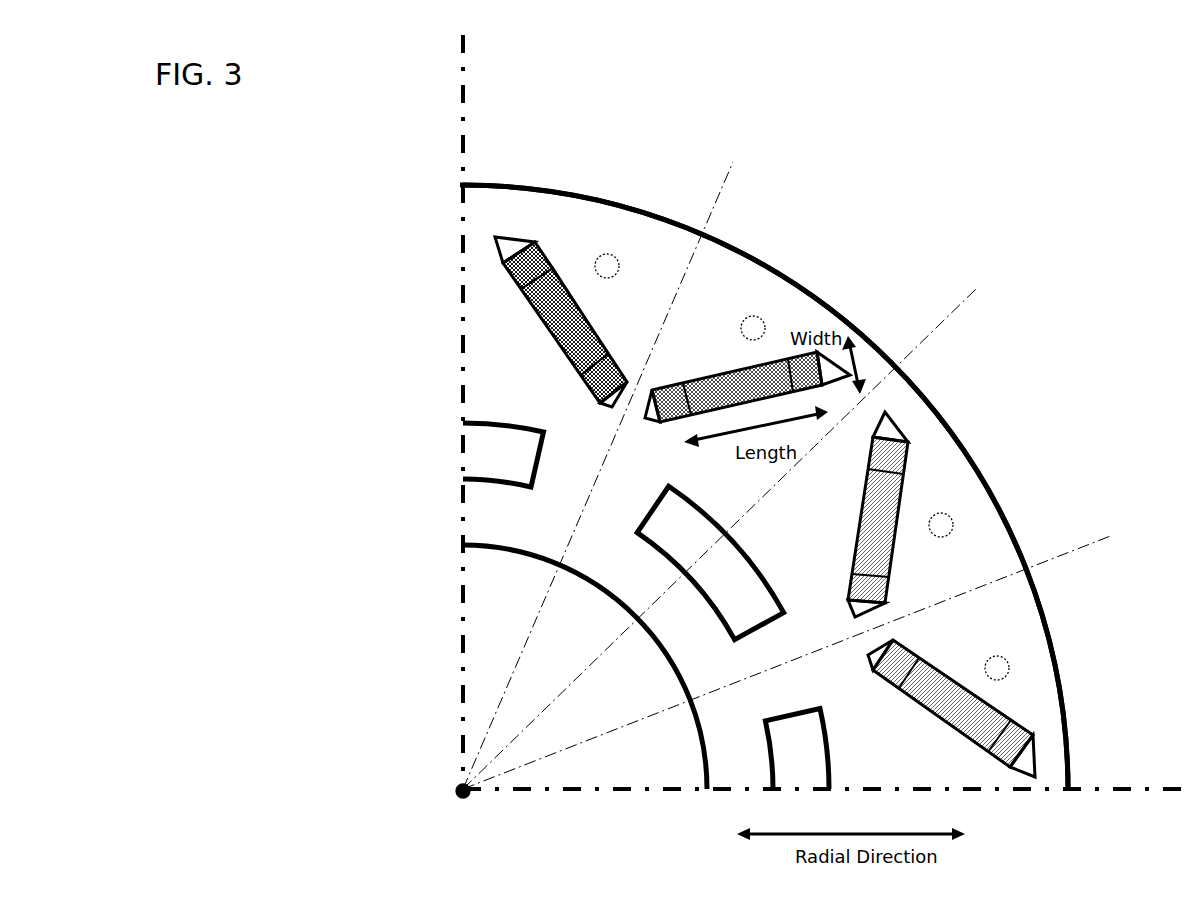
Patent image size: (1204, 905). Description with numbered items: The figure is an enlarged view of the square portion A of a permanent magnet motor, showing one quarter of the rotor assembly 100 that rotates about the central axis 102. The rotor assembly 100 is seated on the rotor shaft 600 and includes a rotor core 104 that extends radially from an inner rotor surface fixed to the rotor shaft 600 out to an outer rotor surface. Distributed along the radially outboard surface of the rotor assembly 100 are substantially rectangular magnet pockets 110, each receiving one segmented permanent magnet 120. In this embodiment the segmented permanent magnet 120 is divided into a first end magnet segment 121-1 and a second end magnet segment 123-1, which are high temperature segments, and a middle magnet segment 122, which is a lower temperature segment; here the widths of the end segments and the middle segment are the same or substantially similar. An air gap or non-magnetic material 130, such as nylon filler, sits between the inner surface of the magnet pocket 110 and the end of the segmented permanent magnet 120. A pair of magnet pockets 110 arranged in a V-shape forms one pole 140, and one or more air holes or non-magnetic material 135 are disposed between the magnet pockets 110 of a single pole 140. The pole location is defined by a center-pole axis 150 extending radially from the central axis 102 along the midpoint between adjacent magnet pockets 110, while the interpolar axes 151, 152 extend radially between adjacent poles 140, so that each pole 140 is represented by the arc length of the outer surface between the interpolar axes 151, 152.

The rotor assembly 100 is at (810, 274).
The central axis 102 is at (458, 794).
The rotor core 104 is at (927, 482).
The magnet pocket 110 is at (477, 280).
The segmented permanent magnet 120 is at (467, 322).
The first end magnet segment 121-1 is at (505, 262).
The middle magnet segment 122 is at (557, 343).
The second end magnet segment 123-1 is at (583, 388).
The air gap or non-magnetic material 130 is at (510, 252).
The air hole or non-magnetic material 135 is at (607, 254).
The pole 140 is at (660, 437).
The center-pole axis 150 is at (739, 531).
The interpolar axis 151 is at (809, 655).
The interpolar axis 152 is at (611, 463).
The rotor shaft 600 is at (502, 630).
The square portion A is at (460, 678).